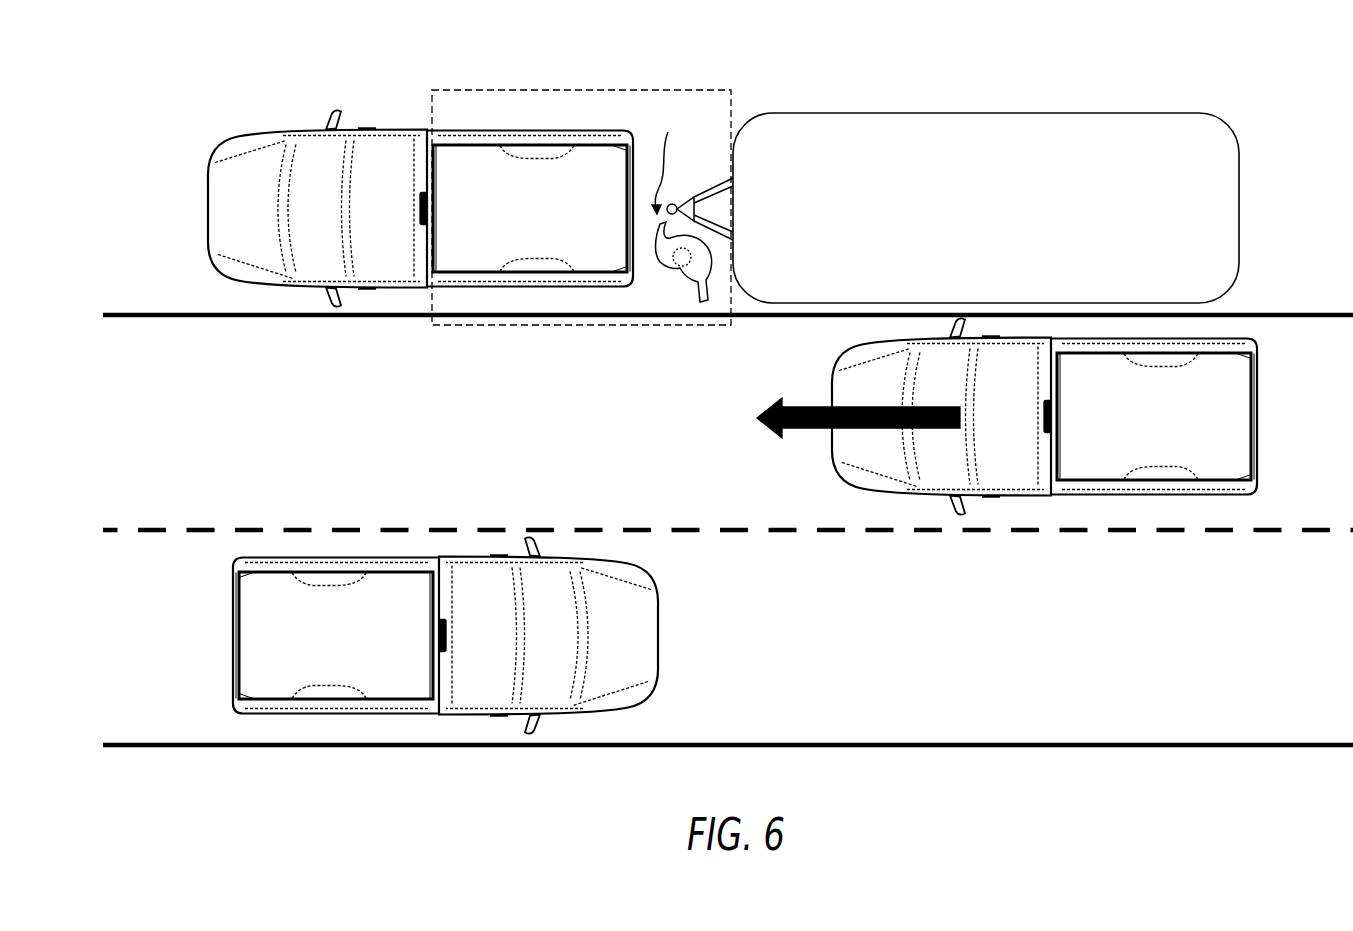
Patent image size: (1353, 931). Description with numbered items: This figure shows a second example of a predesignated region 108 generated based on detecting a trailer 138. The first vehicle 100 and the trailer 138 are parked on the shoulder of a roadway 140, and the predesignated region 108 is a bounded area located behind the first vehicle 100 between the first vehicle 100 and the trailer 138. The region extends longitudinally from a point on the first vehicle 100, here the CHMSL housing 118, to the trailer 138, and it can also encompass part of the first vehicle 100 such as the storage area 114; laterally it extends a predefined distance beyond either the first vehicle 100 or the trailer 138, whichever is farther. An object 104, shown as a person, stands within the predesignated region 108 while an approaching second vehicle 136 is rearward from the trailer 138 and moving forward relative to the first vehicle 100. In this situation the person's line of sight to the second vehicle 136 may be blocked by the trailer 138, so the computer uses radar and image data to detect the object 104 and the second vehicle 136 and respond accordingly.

The first vehicle 100 is at (420, 206).
The object 104 is at (672, 282).
The predesignated region 108 is at (692, 88).
The storage area 114 is at (547, 197).
The CHMSL housing 118 is at (420, 207).
The second vehicle 136 is at (1262, 408).
The trailer 138 is at (1150, 112).
The roadway 140 is at (1283, 313).